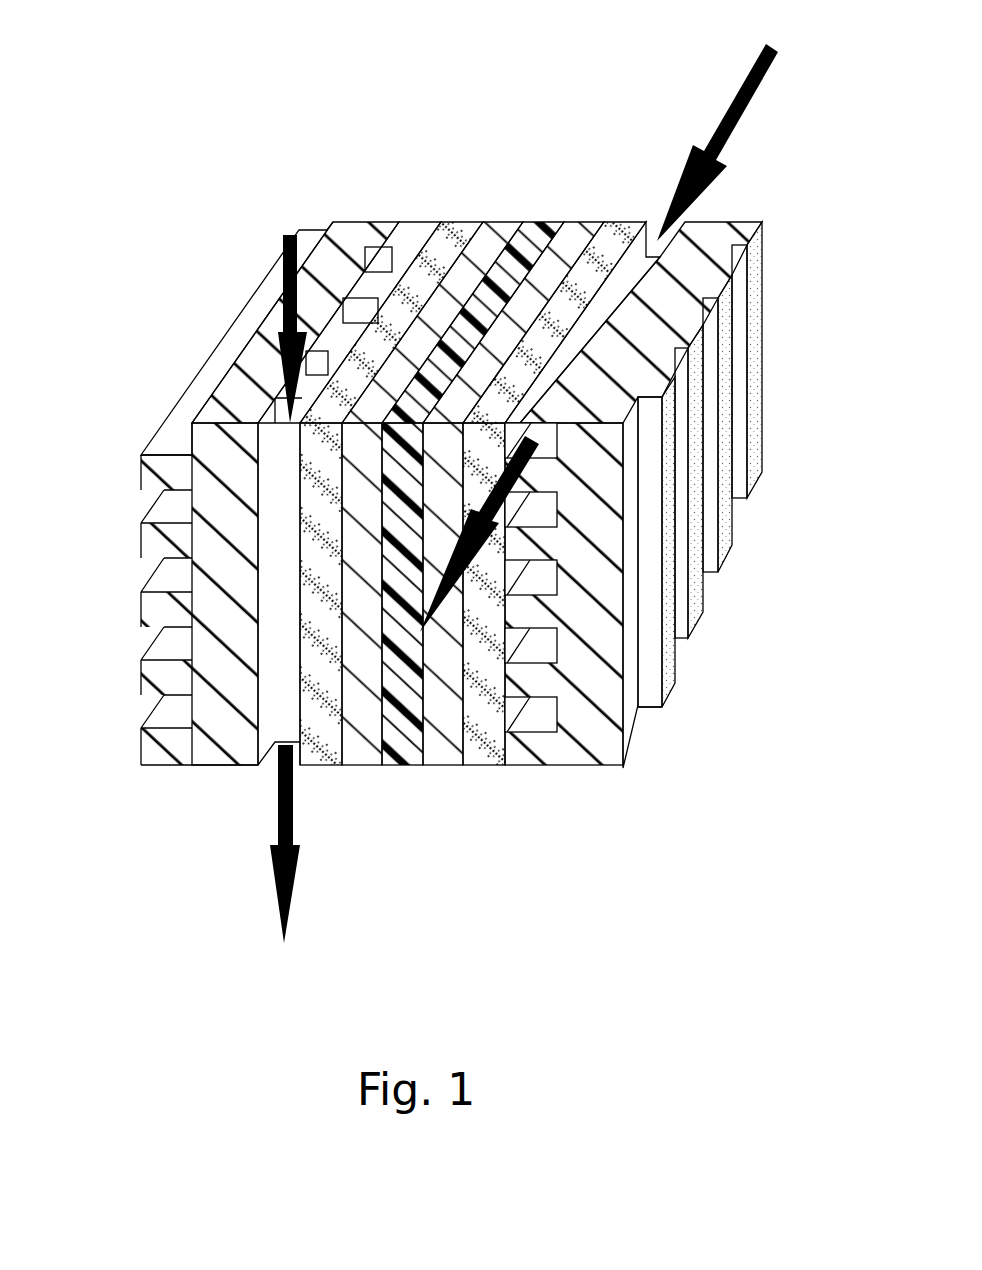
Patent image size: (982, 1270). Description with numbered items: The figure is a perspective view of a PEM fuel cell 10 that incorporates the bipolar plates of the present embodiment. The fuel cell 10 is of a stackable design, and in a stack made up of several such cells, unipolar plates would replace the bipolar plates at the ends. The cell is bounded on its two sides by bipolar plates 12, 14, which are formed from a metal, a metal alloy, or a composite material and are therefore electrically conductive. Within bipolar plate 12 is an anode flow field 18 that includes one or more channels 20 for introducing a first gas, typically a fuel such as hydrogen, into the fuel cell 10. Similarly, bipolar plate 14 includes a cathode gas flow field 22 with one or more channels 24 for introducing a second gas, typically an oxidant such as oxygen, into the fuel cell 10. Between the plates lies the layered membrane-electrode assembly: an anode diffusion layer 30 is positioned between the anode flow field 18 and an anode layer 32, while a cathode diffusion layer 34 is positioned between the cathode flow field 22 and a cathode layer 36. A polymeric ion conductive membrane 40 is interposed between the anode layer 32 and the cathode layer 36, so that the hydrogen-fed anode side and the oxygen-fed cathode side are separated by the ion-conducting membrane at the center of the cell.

The PEM fuel cell 10 is at (252, 178).
The bipolar plate 12 is at (231, 328).
The bipolar plate 14 is at (758, 357).
The anode flow field 18 is at (358, 244).
The channels 20 is at (397, 245).
The cathode gas flow field 22 is at (703, 237).
The channels 24 is at (530, 713).
The anode diffusion layer 30 is at (451, 232).
The anode layer 32 is at (502, 232).
The cathode diffusion layer 34 is at (625, 232).
The cathode layer 36 is at (578, 230).
The polymeric ion conductive membrane 40 is at (545, 230).